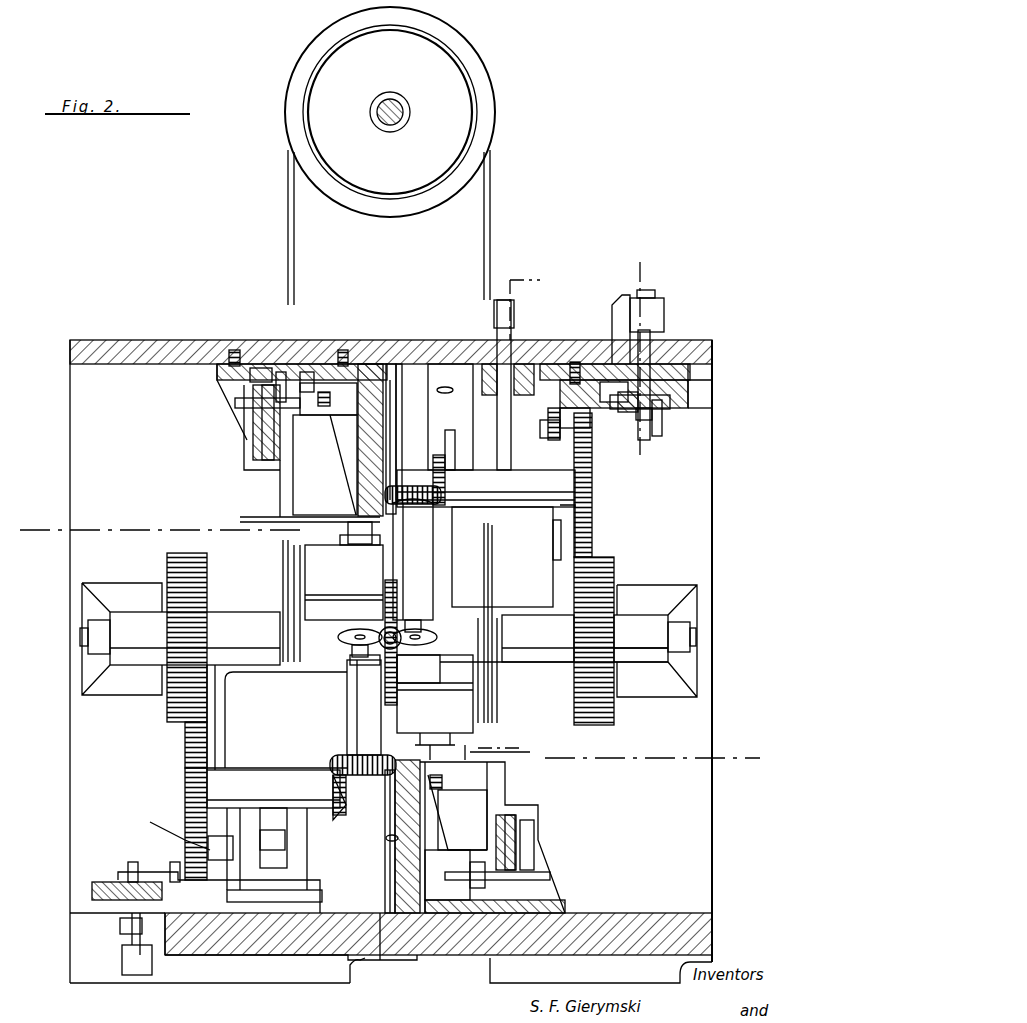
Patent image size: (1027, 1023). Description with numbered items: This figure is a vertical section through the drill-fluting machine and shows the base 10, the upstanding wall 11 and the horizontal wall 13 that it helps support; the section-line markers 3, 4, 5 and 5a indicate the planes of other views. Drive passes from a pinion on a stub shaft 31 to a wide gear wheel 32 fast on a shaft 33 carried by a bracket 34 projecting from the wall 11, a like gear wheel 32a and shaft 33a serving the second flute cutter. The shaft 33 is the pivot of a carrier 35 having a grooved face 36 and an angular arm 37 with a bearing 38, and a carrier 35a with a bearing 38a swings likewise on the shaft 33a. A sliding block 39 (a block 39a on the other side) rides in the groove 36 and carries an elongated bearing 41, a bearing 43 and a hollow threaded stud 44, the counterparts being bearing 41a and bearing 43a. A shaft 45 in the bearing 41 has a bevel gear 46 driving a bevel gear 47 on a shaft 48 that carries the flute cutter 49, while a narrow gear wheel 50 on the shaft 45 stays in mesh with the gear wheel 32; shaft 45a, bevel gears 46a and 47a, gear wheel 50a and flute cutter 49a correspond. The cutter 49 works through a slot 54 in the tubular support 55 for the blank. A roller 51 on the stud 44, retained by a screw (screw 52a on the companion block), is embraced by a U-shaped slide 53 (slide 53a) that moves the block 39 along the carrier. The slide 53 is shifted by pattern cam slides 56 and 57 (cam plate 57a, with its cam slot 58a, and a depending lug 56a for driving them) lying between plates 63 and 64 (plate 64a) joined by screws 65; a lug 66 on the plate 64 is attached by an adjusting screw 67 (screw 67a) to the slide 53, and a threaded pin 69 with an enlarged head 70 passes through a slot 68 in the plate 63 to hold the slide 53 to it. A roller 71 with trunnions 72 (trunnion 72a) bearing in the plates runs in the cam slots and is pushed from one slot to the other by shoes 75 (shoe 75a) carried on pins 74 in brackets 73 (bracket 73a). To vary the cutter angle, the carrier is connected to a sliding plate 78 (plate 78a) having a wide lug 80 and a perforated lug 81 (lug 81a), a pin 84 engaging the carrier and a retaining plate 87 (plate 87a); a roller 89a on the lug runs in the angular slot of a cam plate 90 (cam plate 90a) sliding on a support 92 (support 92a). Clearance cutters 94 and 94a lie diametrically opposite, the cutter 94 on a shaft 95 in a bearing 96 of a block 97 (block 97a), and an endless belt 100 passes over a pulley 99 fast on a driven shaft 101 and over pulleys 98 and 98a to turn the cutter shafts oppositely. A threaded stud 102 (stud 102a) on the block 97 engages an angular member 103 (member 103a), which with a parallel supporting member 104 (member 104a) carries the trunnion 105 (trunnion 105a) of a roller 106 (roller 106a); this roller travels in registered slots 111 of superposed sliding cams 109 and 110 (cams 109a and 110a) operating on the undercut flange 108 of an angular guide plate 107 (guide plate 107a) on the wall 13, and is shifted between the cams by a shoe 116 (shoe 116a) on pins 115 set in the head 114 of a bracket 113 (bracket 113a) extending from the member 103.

The base 10 is at (630, 925).
The wall 11 is at (85, 448).
The horizontally disposed wall 13 is at (120, 340).
The section line 3- 3 is at (393, 641).
The section line 4- 4 is at (637, 351).
The section line 5- 5 is at (516, 510).
The stub shaft 31 is at (130, 622).
The gear wheel 32 is at (614, 560).
The gear wheel 32a is at (208, 585).
The shaft 33 is at (696, 636).
The shaft 33a is at (88, 636).
The bracket 34 is at (652, 598).
The carrier 35 is at (580, 510).
The carrier 35a is at (205, 740).
The groove 36 is at (570, 538).
The extension or arm 37 is at (575, 645).
The bearing 38 is at (518, 665).
The bearing 38a is at (277, 717).
The sliding block 39 is at (538, 638).
The sliding block 39a is at (270, 780).
The elongated bearing 41 is at (515, 507).
The elongated bearing 41a is at (386, 846).
The bearing 43 is at (435, 533).
The bearing 43a is at (350, 690).
The hollow stud 44 is at (525, 465).
The shaft 45 is at (445, 475).
The shaft 45a is at (335, 815).
The beveled gear wheel 46 is at (446, 447).
The beveled gear wheel 46a is at (361, 806).
The beveled gear wheel 47 is at (405, 486).
The beveled gear wheel 47a is at (338, 758).
The shaft 48 is at (352, 658).
The flute cutter 49 is at (438, 640).
The flute cutter 49a is at (338, 638).
The gear wheel 50 is at (595, 471).
The gear wheel 50a is at (190, 797).
The roller 51 is at (486, 488).
The screw 52a is at (287, 848).
The U-shaped slide 53 is at (480, 435).
The U-shaped slide 53a is at (300, 878).
The slot 54 is at (713, 348).
The tubular support 55 is at (400, 628).
The pattern cam slide 56 is at (700, 400).
The lug 56a is at (95, 882).
The cam plate 57 is at (700, 382).
The cam plate 57a is at (130, 862).
The slot 58a is at (628, 412).
The bearing 5a is at (262, 838).
The plate 63 is at (595, 364).
The plate 64 is at (600, 408).
The plate 64a is at (165, 872).
The screws 65 is at (576, 362).
The lug 66 is at (560, 401).
The adjusting screw 67 is at (560, 440).
The adjusting screw 67a is at (150, 822).
The slot 68 is at (525, 364).
The screw-threaded pin 69 is at (475, 382).
The enlarged head 70 is at (512, 340).
The roller 71 is at (657, 420).
The trunnions 72 is at (668, 364).
The trunnions 72a is at (174, 862).
The bracket 73 is at (620, 298).
The bracket 73a is at (158, 975).
The pins 74 is at (648, 298).
The shoe 75 is at (664, 318).
The shoe 75a is at (120, 926).
The sliding plate 78 is at (392, 425).
The sliding plate 78a is at (442, 822).
The lug 80 is at (360, 530).
The lug 81 is at (392, 407).
The lug 81a is at (388, 880).
The pin 84 is at (345, 380).
The plate 87 is at (408, 350).
The plate 87a is at (386, 915).
The roller 89a is at (386, 868).
The cam plate 90 is at (365, 447).
The cam plate 90a is at (420, 810).
The support 92 is at (340, 478).
The support 92a is at (462, 820).
The clearance cutter 94 is at (392, 606).
The clearance cutter 94a is at (435, 694).
The shaft 95 is at (385, 602).
The bearing 96 is at (344, 582).
The block 97 is at (305, 583).
The block 97a is at (426, 742).
The pulley 98 is at (283, 570).
The pulley 98a is at (498, 713).
The pulley 99 is at (302, 128).
The endless belt 100 is at (491, 233).
The shaft 101 is at (412, 113).
The screw-threaded stud 102 is at (290, 522).
The screw-threaded stud 102a is at (480, 752).
The angular member 103 is at (328, 465).
The angular member 103a is at (490, 783).
The supporting member 104 is at (244, 470).
The supporting member 104a is at (505, 792).
The trunnion 105 is at (240, 408).
The trunnion 105a is at (555, 885).
The roller 106 is at (268, 368).
The roller 106a is at (534, 845).
The angular guide plate 107 is at (255, 425).
The angular guide plate 107a is at (515, 820).
The undercut flange 108 is at (272, 470).
The sliding cam 109 is at (265, 440).
The sliding cam 109a is at (520, 830).
The sliding cam 110 is at (292, 435).
The sliding cam 110a is at (492, 900).
The slots 111 is at (288, 372).
The bracket 113 is at (328, 409).
The bracket 113a is at (457, 814).
The head 114 is at (330, 380).
The pins 115 is at (358, 364).
The shoe 116 is at (300, 380).
The shoe 116a is at (468, 905).